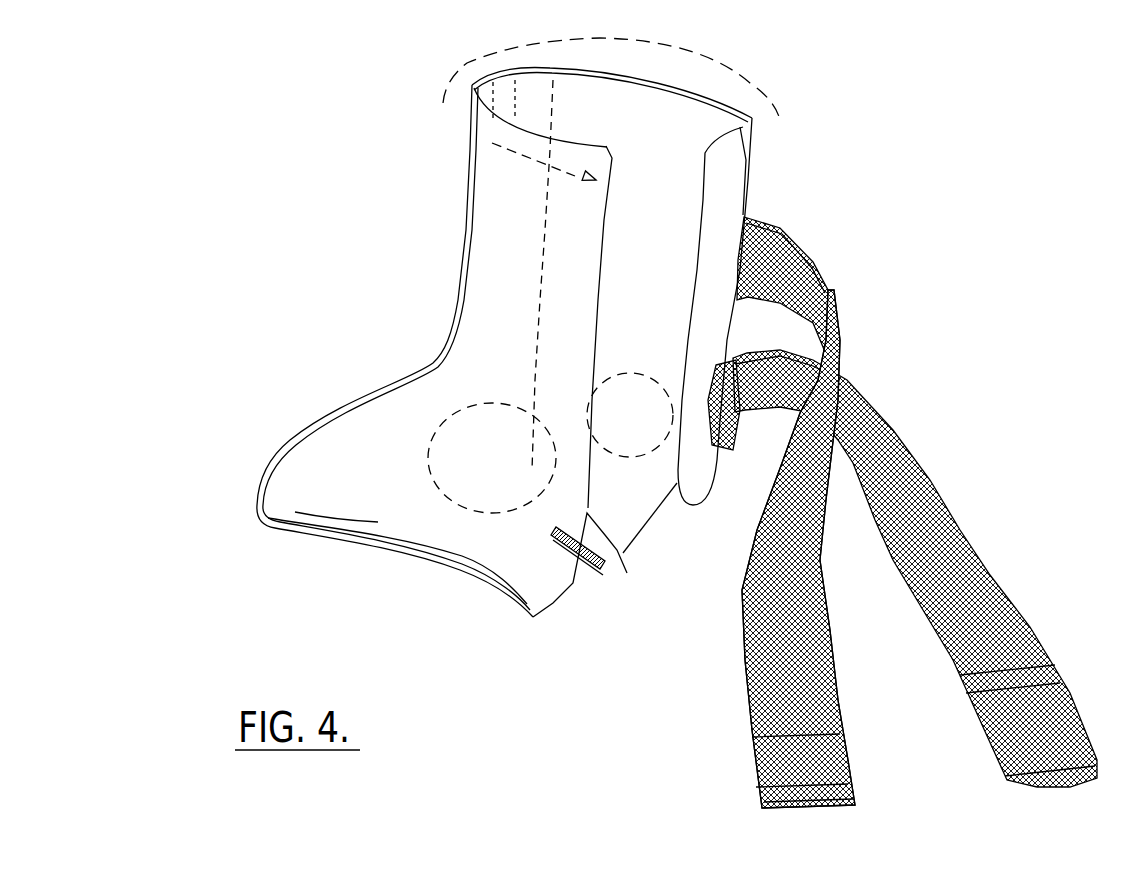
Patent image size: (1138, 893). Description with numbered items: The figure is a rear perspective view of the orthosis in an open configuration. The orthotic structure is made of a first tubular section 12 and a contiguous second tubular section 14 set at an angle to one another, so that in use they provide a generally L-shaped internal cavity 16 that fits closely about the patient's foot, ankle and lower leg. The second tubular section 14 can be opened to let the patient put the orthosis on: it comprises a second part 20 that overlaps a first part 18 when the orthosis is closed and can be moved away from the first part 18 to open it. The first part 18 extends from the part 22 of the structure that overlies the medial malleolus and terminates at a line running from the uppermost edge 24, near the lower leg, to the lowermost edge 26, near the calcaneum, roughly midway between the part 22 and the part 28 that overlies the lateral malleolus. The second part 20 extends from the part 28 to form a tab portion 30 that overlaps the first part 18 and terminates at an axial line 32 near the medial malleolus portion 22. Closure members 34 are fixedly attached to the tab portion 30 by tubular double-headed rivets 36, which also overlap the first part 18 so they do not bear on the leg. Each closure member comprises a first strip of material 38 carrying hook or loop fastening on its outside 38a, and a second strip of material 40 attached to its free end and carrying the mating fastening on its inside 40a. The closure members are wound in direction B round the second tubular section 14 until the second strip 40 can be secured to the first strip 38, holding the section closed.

The winding direction B is at (448, 93).
The first tubular section 12 is at (340, 490).
The second tubular section 14 is at (487, 220).
The internal cavity 16 is at (562, 568).
The first part 18 is at (570, 313).
The second part 20 is at (737, 160).
The medial malleolus part 22 is at (502, 473).
The uppermost edge 24 is at (606, 146).
The lowermost edge 26 is at (627, 573).
The lateral malleolus part 28 is at (638, 433).
The tab portion 30 is at (697, 500).
The axial line 32 is at (540, 207).
The closure members 34 is at (886, 563).
The tubular double-headed rivets 36 is at (757, 218).
The first strip of material 38 is at (831, 549).
The outside of first strip 38a is at (1000, 630).
The second strip of material 40 is at (858, 795).
The inside of second strip 40a is at (830, 785).